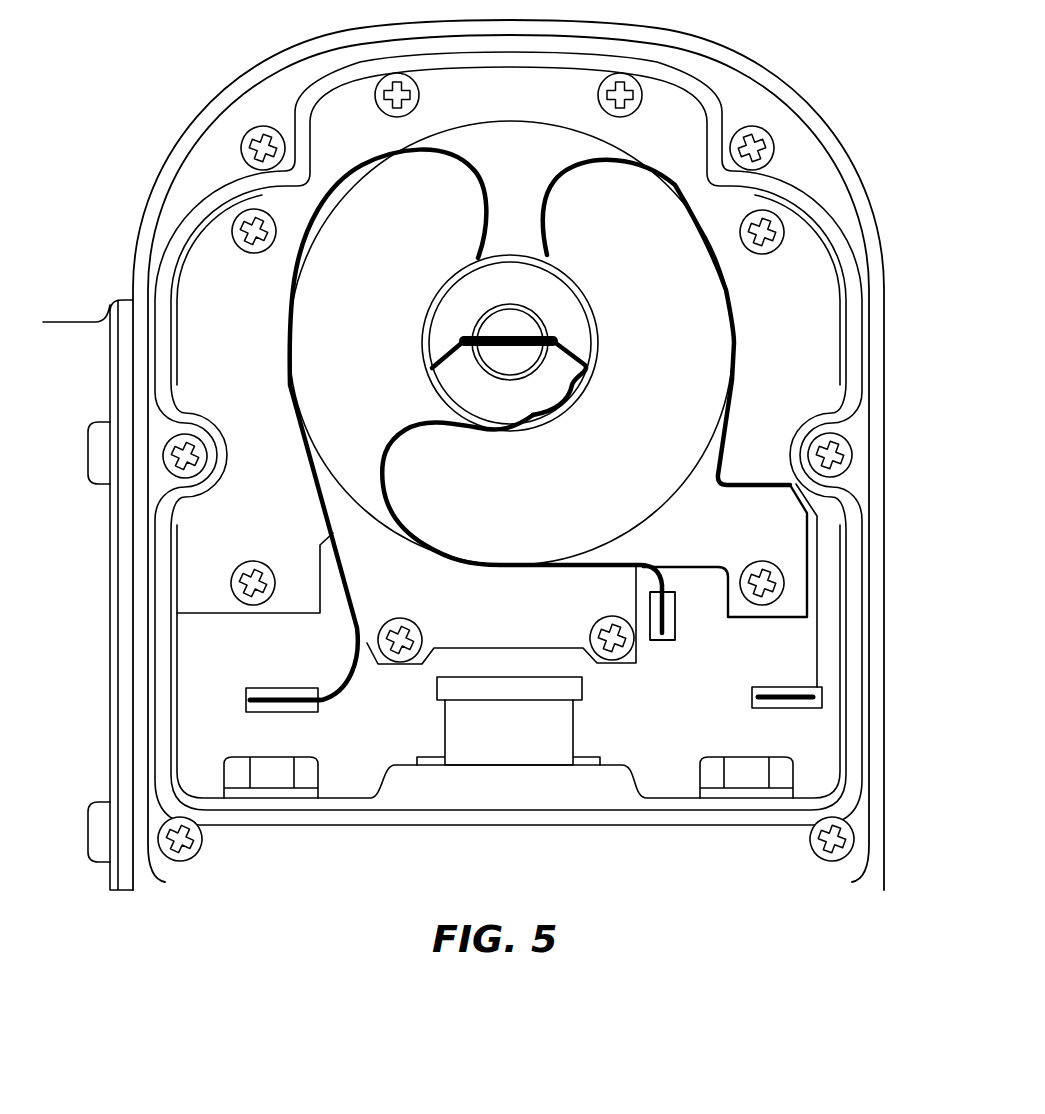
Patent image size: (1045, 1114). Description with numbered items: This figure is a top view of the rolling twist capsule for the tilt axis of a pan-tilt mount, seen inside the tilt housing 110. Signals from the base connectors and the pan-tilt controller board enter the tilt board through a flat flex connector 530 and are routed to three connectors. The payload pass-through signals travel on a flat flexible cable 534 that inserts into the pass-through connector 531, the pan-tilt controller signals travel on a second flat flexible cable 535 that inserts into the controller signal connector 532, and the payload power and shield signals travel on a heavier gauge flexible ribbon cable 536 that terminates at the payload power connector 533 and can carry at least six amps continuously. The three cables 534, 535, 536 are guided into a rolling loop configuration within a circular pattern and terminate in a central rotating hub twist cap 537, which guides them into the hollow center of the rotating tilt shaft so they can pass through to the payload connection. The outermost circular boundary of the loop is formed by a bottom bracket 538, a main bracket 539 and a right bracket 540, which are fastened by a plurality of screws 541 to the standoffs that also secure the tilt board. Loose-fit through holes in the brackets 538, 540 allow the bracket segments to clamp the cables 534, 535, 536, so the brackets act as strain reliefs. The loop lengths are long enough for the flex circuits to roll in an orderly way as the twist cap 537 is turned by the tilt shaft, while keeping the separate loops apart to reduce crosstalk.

The tilt housing 110 is at (720, 48).
The flat flex connector 530 is at (523, 738).
The pass-through connector 531 is at (292, 679).
The controller signal connector 532 is at (798, 679).
The payload power connector 533 is at (684, 669).
The flat flexible cable 534 is at (443, 199).
The flat flexible cable 535 is at (612, 213).
The flexible ribbon cable 536 is at (455, 459).
The central rotating hub twist cap 537 is at (520, 291).
The bottom bracket 538 is at (505, 599).
The main bracket 539 is at (265, 511).
The right bracket 540 is at (757, 538).
The screws 541 is at (767, 222).